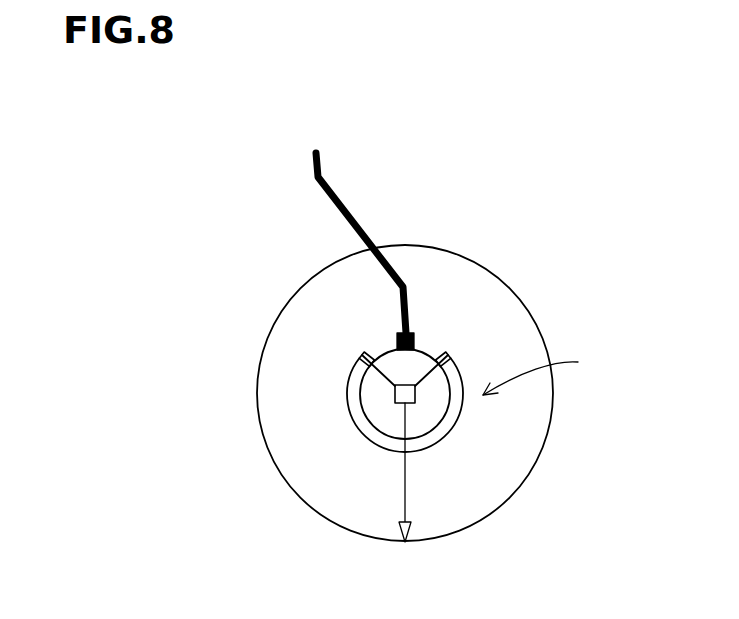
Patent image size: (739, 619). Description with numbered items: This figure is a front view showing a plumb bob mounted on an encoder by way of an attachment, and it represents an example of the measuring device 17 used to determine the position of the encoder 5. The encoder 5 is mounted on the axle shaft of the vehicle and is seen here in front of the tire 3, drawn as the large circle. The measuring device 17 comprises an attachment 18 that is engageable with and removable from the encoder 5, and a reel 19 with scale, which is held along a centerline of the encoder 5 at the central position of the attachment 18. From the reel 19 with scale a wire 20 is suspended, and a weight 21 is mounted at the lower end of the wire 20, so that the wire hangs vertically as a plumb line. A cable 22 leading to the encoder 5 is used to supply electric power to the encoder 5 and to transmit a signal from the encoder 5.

The tire 3 is at (480, 262).
The encoder 5 is at (393, 352).
The measuring device 17 is at (550, 371).
The attachment 18 is at (347, 405).
The reel with scale 19 is at (372, 353).
The wire 20 is at (405, 481).
The weight 21 is at (415, 530).
The cable 22 is at (338, 203).